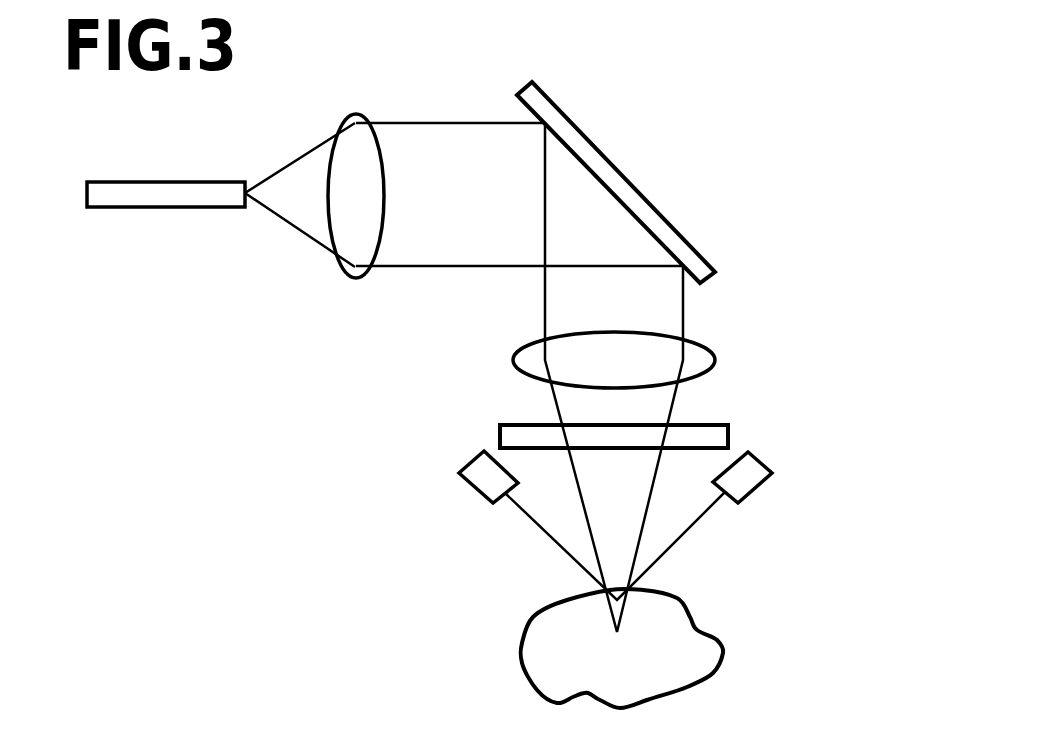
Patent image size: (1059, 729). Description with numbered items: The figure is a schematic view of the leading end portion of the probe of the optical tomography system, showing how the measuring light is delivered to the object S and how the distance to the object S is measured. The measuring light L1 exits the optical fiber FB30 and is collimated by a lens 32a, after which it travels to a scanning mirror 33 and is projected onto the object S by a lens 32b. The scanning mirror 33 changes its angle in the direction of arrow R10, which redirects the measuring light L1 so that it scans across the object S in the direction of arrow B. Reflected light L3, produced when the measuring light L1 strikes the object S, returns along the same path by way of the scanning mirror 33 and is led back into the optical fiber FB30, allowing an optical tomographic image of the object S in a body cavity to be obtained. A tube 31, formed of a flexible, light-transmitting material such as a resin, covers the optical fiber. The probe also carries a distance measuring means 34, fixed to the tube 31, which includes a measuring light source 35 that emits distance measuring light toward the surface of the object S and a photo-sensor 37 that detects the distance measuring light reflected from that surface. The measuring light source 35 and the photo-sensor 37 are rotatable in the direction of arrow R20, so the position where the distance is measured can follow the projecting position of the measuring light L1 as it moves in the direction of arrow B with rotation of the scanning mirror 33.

The optical fiber FB30 is at (169, 181).
The measuring light L1 is at (303, 142).
The lens 32a is at (357, 113).
The reflected light L3 is at (415, 110).
The scanning mirror 33 is at (568, 128).
The arrow R10 is at (592, 152).
The lens 32b is at (715, 360).
The tube 31 is at (728, 436).
The measuring light source 35 is at (466, 465).
The photo-sensor 37 is at (765, 460).
The arrow R20 is at (517, 460).
The distance measuring means 34 is at (432, 525).
The arrow B is at (705, 573).
The object S is at (693, 612).